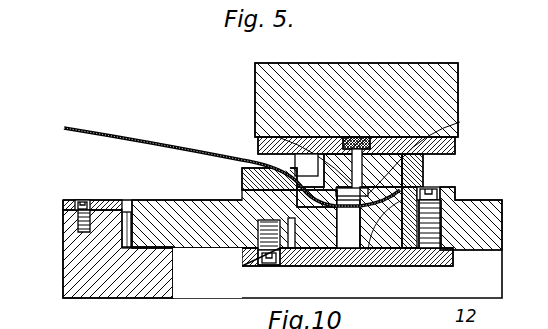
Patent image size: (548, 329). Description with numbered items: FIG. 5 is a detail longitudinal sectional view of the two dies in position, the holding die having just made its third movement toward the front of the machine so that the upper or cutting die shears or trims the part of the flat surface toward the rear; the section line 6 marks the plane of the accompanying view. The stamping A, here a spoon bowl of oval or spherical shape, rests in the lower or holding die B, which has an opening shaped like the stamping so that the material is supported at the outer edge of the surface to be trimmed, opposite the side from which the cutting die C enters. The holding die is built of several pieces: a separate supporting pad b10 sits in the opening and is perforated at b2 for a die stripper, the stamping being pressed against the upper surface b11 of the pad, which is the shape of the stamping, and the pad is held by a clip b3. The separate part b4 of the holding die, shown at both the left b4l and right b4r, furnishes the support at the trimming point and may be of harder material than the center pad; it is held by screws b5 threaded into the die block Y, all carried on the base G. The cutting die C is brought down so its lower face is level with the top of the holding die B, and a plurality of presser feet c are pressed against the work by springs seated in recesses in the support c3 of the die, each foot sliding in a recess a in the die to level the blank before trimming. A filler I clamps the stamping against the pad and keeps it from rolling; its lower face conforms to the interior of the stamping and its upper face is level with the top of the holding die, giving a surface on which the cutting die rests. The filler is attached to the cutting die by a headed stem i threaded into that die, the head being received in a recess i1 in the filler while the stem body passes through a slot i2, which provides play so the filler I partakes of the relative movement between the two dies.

The section line 6- 6 is at (356, 88).
The support c3 is at (423, 84).
The headed stem i is at (257, 146).
The presser foot c is at (375, 153).
The cutting die C is at (368, 180).
The recess a is at (306, 165).
The filler I is at (243, 188).
The separate part of the holding die b4 is at (212, 205).
The upper surface of the pad b11 is at (273, 258).
The clip b3 is at (430, 262).
The perforation b2 is at (345, 263).
The recess i1 is at (304, 284).
The slot i2 is at (348, 224).
The screws b5 is at (453, 187).
The holding die B is at (337, 236).
The separate part of the holding die b4r is at (502, 210).
The base G is at (93, 263).
The die block Y is at (207, 273).
The stamping A is at (180, 146).
The separate part of the holding die b4l is at (372, 258).
The supporting pad b10 is at (368, 258).